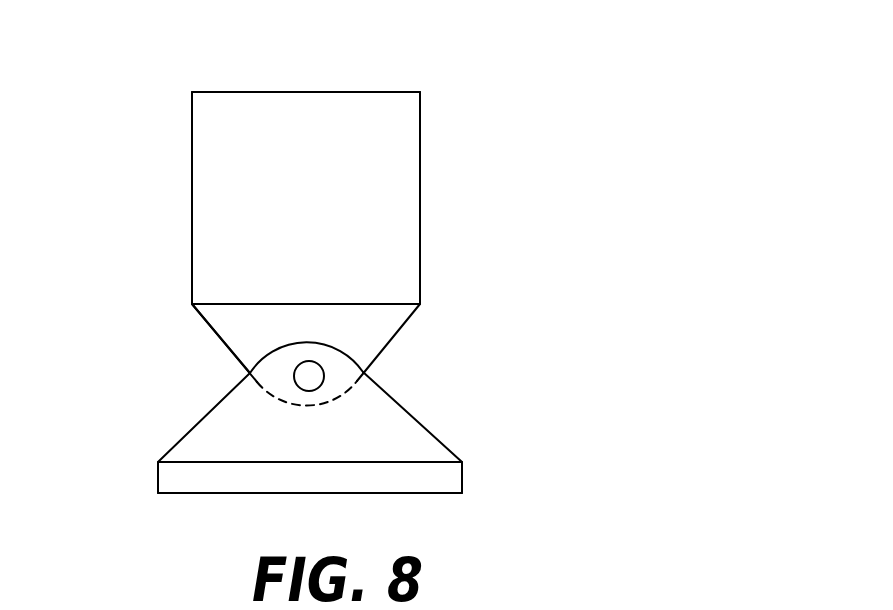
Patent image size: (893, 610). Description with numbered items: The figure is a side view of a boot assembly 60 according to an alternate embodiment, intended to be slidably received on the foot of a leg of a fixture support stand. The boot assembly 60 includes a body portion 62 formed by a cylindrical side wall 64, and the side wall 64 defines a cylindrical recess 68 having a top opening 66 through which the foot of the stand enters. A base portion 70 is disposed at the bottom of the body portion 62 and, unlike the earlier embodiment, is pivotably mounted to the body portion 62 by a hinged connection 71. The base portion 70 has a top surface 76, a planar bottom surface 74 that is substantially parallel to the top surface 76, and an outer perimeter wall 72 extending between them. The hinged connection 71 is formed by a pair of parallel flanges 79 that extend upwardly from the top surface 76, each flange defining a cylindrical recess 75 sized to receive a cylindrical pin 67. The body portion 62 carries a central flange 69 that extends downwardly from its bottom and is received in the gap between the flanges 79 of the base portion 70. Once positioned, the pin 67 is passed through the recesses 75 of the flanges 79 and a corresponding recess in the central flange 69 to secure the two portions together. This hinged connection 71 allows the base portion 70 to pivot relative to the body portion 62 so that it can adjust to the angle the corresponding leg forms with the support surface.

The boot assembly 60 is at (120, 108).
The body portion 62 is at (185, 223).
The cylindrical side wall 64 is at (373, 183).
The top opening 66 is at (398, 92).
The cylindrical recess 68 is at (320, 82).
The central flange 69 is at (240, 322).
The cylindrical pin 67 is at (310, 372).
The cylindrical recess 75 is at (323, 380).
The hinged connection 71 is at (233, 373).
The base portion 70 is at (488, 405).
The flanges 79 is at (377, 415).
The top surface 76 is at (200, 462).
The outer perimeter wall 72 is at (164, 478).
The planar bottom surface 74 is at (423, 495).